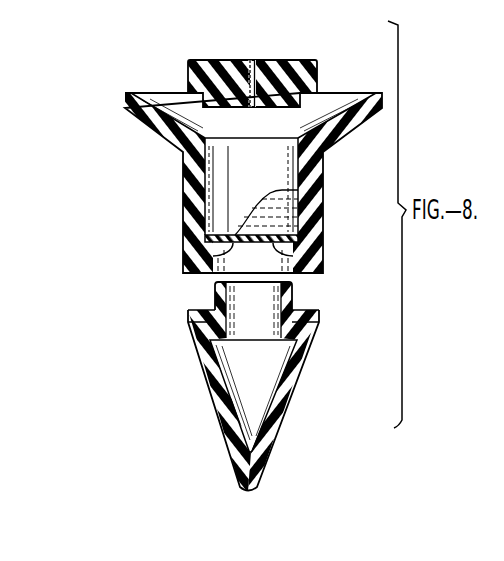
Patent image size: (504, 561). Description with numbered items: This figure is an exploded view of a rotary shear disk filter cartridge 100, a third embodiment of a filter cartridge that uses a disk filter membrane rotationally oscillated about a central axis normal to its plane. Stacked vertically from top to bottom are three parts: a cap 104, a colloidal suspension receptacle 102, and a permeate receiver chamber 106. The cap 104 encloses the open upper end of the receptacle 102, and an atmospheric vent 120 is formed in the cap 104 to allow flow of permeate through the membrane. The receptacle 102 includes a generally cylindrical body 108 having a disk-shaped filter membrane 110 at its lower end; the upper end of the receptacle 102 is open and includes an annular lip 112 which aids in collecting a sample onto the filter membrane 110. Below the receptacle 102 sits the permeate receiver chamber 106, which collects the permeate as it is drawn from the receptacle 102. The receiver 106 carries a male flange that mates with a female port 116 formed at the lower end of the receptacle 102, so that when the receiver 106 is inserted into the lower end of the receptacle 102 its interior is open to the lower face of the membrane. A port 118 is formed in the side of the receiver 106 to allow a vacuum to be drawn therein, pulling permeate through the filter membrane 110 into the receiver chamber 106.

The rotary shear disk filter cartridge 100 is at (108, 211).
The colloidal suspension receptacle 102 is at (315, 184).
The cap 104 is at (315, 70).
The permeate receiver chamber 106 is at (290, 410).
The cylindrical body 108 is at (183, 187).
The filter membrane 110 is at (293, 250).
The annular lip 112 is at (130, 104).
The female port 116 is at (228, 250).
The port 118 is at (192, 322).
The atmospheric vent 120 is at (252, 60).